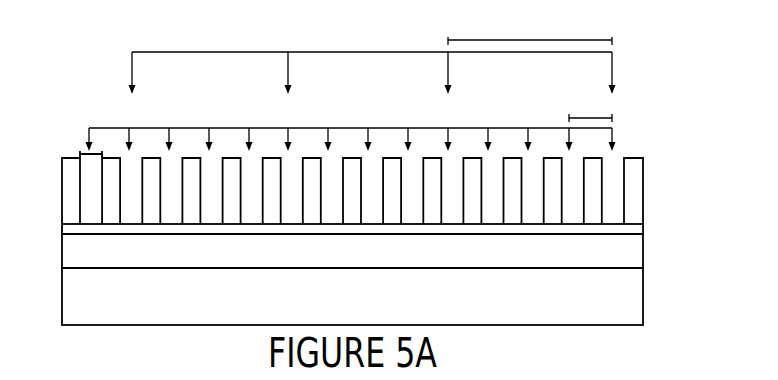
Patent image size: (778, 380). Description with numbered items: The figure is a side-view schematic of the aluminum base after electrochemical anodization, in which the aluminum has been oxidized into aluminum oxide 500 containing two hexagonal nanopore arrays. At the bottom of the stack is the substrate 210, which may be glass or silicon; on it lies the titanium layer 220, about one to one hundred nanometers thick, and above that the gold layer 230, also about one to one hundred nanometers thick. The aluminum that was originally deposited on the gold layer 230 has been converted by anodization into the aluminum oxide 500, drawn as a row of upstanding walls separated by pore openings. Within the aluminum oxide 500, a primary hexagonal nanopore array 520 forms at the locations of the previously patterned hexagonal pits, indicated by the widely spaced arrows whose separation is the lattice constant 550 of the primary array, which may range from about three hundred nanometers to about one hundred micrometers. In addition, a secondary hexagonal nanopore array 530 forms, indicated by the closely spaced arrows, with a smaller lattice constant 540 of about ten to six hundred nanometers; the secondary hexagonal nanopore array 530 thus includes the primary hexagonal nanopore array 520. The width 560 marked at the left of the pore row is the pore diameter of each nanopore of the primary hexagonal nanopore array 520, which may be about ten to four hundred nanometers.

The substrate 210 is at (637, 292).
The titanium layer 220 is at (637, 250).
The gold layer 230 is at (637, 229).
The aluminum oxide 500 is at (643, 190).
The primary hexagonal nanopore array 520 is at (344, 52).
The secondary hexagonal nanopore array 530 is at (190, 128).
The lattice constant of the secondary hexagonal nanopore array 540 is at (590, 106).
The lattice constant of the primary hexagonal nanopore array 550 is at (530, 29).
The width of nanopores of the primary hexagonal nanopore array 560 is at (86, 153).